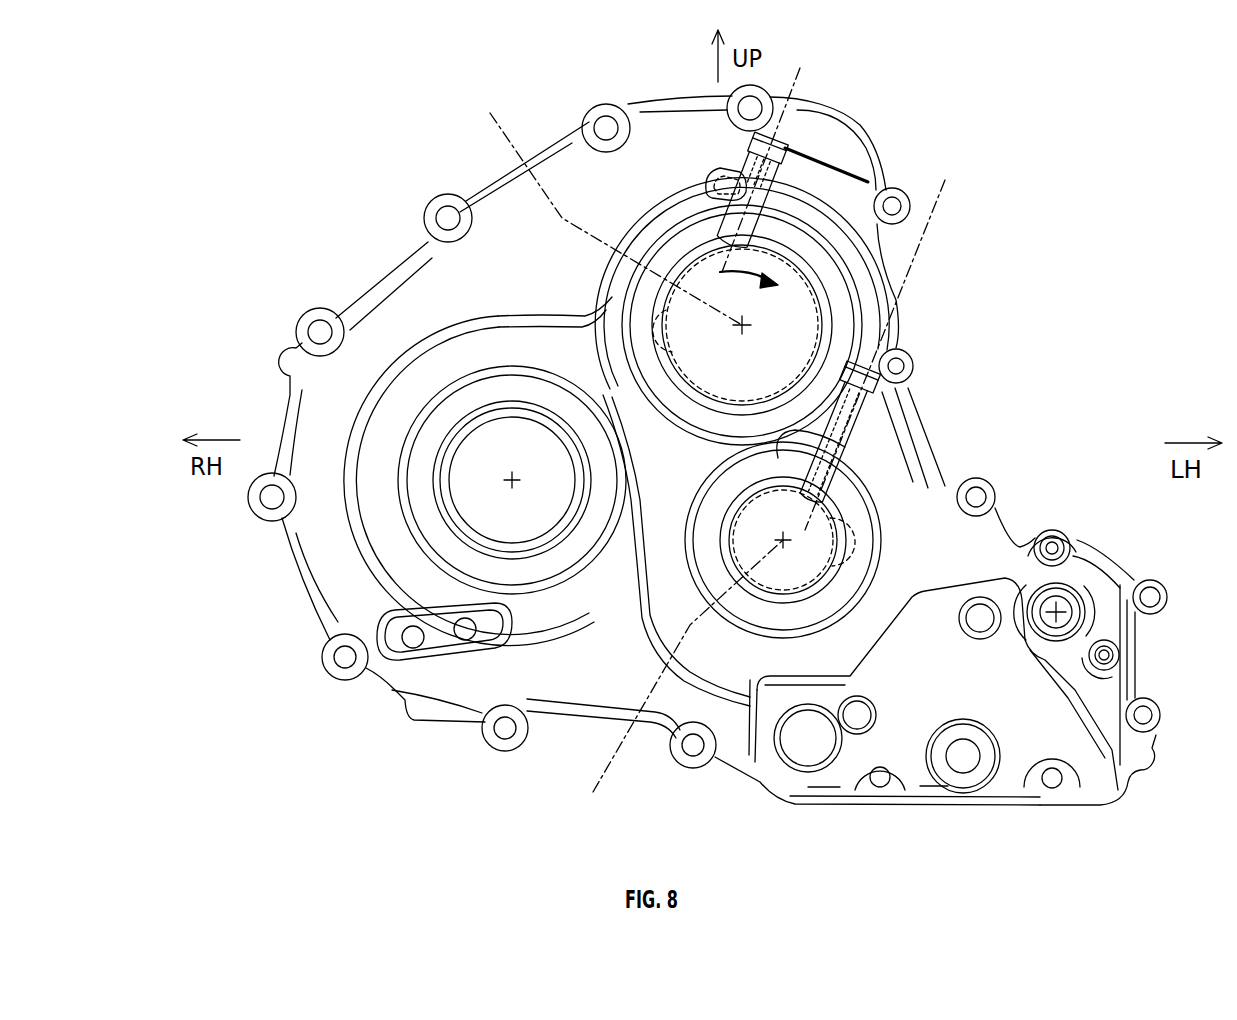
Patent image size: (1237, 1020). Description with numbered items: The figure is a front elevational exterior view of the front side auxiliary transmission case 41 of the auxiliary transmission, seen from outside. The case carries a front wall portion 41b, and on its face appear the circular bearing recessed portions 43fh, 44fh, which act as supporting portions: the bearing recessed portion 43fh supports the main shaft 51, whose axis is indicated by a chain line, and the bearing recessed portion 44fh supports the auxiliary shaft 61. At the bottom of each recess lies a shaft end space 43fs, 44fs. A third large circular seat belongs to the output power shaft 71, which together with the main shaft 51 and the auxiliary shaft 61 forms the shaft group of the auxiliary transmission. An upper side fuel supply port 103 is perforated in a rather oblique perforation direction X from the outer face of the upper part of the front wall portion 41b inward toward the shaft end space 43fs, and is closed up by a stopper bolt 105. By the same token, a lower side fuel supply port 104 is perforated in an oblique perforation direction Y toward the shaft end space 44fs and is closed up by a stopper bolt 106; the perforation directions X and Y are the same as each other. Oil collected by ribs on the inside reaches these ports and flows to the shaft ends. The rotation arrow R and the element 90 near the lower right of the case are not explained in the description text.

The front side auxiliary transmission case 41 is at (387, 228).
The front wall portion 41b is at (875, 278).
The shaft end space 43fs is at (764, 379).
The bearing recessed portion 43fh is at (664, 332).
The shaft end space 44fs is at (812, 585).
The bearing recessed portion 44fh is at (840, 530).
The main shaft 51 is at (605, 204).
The auxiliary shaft 61 is at (679, 681).
The output power shaft 71 is at (513, 480).
The oil passage boss 90 is at (1058, 642).
The upper side fuel supply port 103 is at (713, 168).
The lower side fuel supply port 104 is at (840, 480).
The stopper bolt 105 is at (765, 140).
The stopper bolt 106 is at (897, 350).
The perforation direction X is at (812, 80).
The perforation direction Y is at (955, 205).
The rotation direction R is at (758, 293).